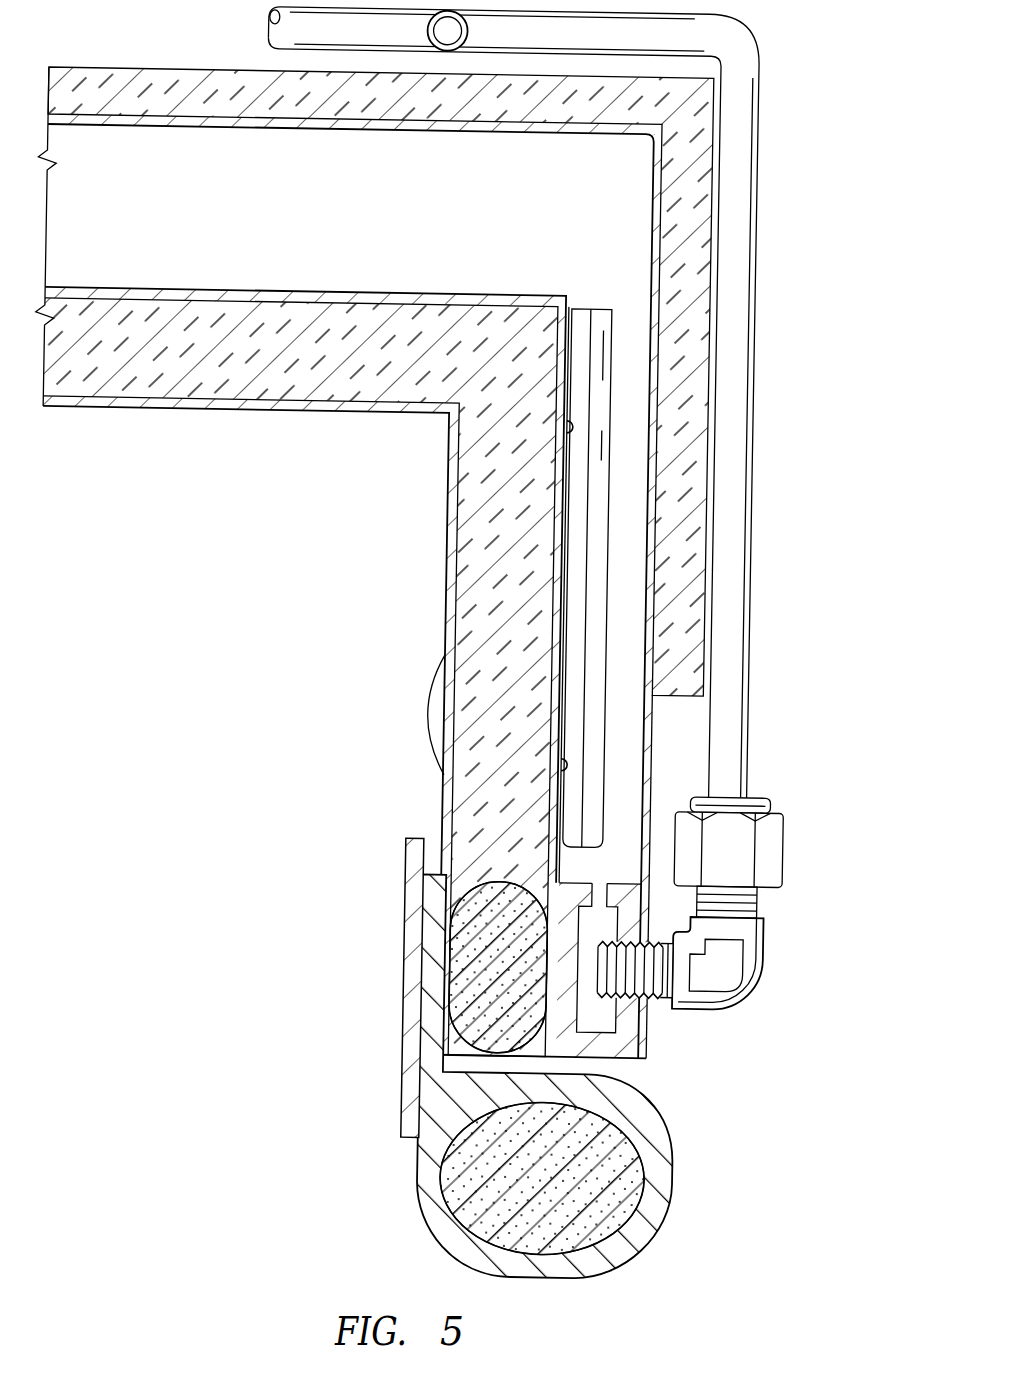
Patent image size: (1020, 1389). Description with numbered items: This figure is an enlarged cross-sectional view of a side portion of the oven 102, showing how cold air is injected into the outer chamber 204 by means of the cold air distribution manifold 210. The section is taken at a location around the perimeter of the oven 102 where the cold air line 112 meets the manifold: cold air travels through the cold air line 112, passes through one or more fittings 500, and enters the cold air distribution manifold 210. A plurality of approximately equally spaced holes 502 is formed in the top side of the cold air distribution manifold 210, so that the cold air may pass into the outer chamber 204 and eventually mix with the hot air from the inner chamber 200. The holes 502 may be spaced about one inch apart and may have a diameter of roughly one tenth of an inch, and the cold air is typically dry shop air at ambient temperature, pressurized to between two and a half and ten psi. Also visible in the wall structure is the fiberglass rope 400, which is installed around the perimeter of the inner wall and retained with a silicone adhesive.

The oven 102 is at (434, 643).
The cold air line 112 is at (757, 427).
The inner chamber 200 is at (274, 485).
The outer chamber 204 is at (370, 225).
The cold air distribution manifold 210 is at (626, 1047).
The fiberglass rope 400 is at (500, 880).
The fitting 500 is at (779, 949).
The holes 502 is at (608, 881).